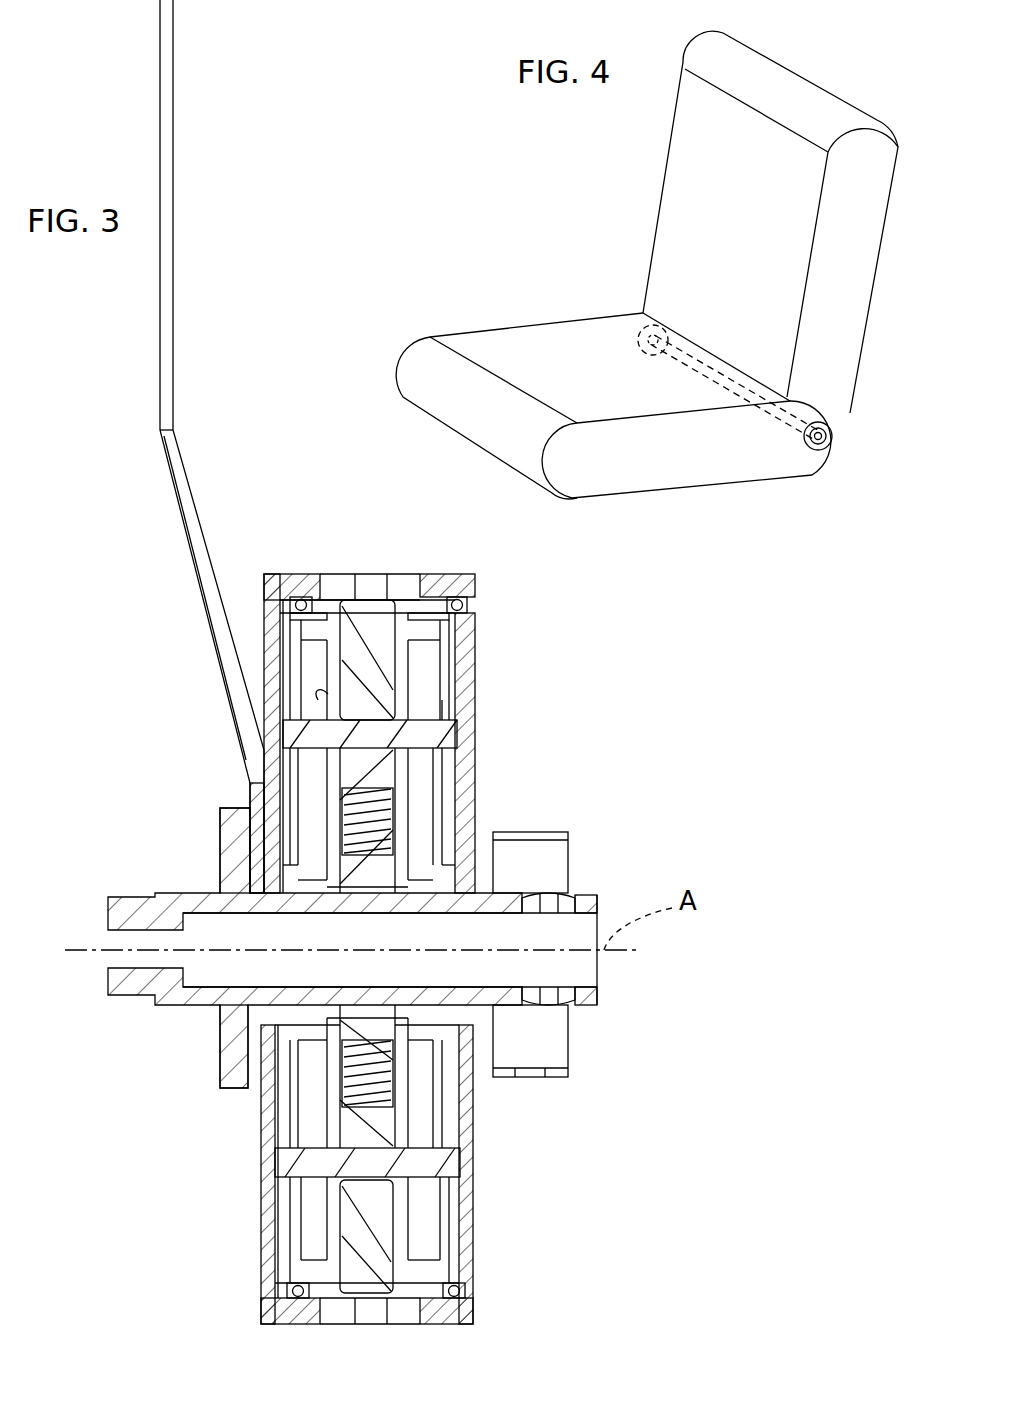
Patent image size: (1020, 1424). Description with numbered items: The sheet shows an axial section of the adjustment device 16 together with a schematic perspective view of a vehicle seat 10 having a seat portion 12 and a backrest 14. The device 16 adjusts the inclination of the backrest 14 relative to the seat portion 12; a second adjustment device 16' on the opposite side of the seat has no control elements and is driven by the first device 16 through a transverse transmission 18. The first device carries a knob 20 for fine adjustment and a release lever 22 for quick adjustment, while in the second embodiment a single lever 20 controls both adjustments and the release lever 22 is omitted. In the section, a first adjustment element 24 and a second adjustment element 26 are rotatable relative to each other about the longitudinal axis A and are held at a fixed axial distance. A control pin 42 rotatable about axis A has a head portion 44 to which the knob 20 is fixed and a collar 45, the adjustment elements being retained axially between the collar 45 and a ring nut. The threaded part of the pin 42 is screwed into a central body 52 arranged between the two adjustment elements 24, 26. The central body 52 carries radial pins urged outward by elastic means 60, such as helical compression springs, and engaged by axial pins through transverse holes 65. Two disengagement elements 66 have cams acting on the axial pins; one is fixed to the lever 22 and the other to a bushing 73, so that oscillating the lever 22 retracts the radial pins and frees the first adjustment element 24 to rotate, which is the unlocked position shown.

In FIG. 4, the seat 10 is at (647, 285).
In FIG. 4, the seat portion 12 is at (462, 330).
In FIG. 4, the backrest 14 is at (646, 241).
In FIG. 3, the adjustment device 16 is at (368, 934).
In FIG. 4, the adjustment device 16 is at (824, 423).
In FIG. 4, the adjustment device 16' is at (620, 360).
In FIG. 4, the transverse transmission 18 is at (710, 358).
In FIG. 4, the knob 20 is at (811, 448).
In FIG. 3, the release lever 22 is at (175, 367).
In FIG. 3, the first adjustment element 24 is at (413, 695).
In FIG. 3, the second adjustment element 26 is at (470, 682).
In FIG. 3, the control pin 42 is at (190, 890).
In FIG. 3, the head portion 44 is at (132, 903).
In FIG. 3, the collar 45 is at (220, 1045).
In FIG. 3, the central body 52 is at (458, 760).
In FIG. 3, the elastic means 60 is at (378, 818).
In FIG. 3, the transverse holes 65 is at (320, 702).
In FIG. 3, the disengagement elements 66 is at (520, 836).
In FIG. 3, the bushing 73 is at (548, 1068).